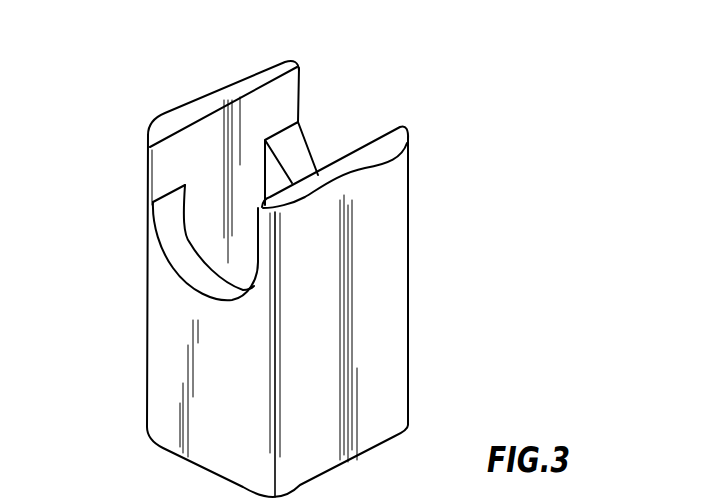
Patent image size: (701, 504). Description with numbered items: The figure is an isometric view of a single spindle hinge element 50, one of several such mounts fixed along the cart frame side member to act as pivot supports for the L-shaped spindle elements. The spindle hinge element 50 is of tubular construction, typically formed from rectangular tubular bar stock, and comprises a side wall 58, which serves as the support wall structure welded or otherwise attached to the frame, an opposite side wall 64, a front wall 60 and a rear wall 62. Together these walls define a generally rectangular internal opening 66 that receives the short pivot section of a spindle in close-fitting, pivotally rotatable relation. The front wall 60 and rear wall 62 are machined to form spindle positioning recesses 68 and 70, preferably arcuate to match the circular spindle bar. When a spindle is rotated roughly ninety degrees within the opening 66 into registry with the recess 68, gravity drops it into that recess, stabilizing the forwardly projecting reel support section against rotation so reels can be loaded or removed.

The spindle hinge element 50 is at (408, 234).
The side wall 58 is at (192, 100).
The front wall 60 is at (180, 324).
The rear wall 62 is at (298, 160).
The side wall 64 is at (335, 365).
The internal opening 66 is at (208, 198).
The spindle positioning recess 68 is at (192, 265).
The spindle positioning recess 70 is at (306, 156).